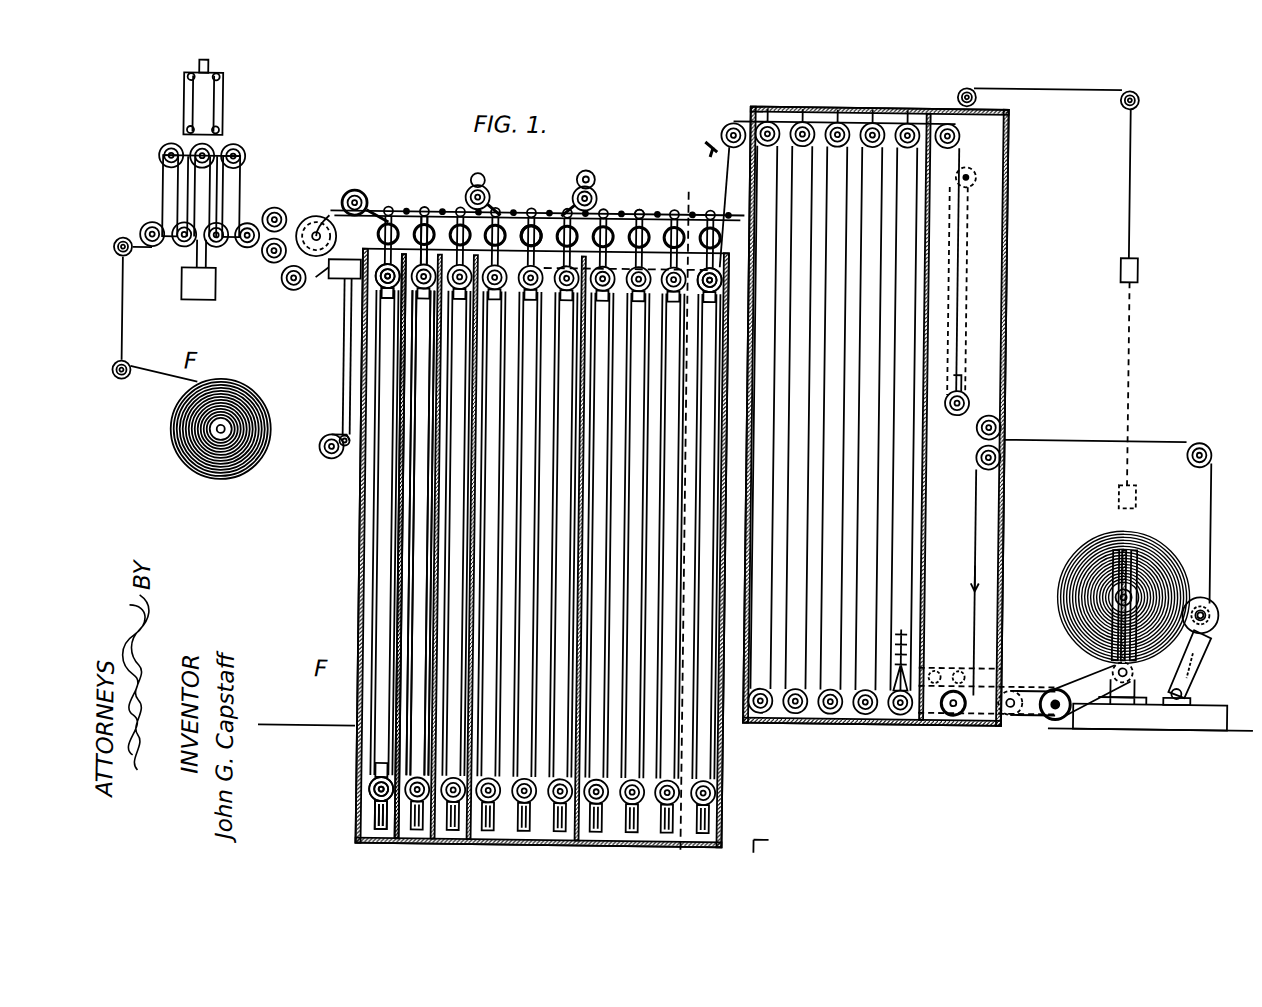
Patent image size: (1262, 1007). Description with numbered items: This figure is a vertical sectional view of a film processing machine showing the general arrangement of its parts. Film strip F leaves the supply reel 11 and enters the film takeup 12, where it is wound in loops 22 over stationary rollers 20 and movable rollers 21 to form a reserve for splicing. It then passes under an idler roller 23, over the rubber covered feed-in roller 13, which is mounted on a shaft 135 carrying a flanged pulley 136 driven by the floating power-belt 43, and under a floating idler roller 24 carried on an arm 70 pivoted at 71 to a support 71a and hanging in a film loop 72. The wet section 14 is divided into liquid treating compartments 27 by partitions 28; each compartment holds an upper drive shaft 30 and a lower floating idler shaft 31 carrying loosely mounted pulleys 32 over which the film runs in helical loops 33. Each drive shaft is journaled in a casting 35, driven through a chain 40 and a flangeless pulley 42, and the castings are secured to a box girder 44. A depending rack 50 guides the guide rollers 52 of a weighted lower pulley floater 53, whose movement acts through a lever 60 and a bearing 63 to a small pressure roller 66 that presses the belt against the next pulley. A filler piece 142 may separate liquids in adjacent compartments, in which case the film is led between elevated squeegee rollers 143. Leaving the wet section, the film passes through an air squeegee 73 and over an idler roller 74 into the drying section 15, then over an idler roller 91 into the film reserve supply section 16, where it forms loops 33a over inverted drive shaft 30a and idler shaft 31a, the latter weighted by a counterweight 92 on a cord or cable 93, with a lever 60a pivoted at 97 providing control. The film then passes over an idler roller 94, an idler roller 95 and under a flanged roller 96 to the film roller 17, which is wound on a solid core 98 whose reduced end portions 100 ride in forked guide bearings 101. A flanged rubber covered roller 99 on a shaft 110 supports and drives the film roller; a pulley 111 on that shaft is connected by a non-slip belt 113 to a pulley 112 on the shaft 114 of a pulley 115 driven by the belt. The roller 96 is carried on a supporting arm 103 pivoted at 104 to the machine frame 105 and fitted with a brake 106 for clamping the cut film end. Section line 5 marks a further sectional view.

The section line 5 is at (666, 187).
The supply reel 11 is at (245, 478).
The film takeup 12 is at (215, 150).
The feed-in roller 13 is at (313, 219).
The wet section 14 is at (359, 500).
The drying section 15 is at (798, 118).
The film reserve supply section 16 is at (1003, 212).
The film roller 17 is at (1068, 522).
The stationary rollers 20 is at (180, 252).
The movable rollers 21 is at (168, 150).
The loops 22 is at (228, 195).
The idler roller 23 is at (282, 291).
The floating idler roller 24 is at (330, 438).
The liquid treating compartments 27 is at (412, 580).
The partitions 28 is at (430, 636).
The upper drive shaft 30 is at (374, 286).
The drive shaft 30a is at (955, 712).
The lower floating idler shaft 31 is at (372, 788).
The idler shaft 31a is at (967, 395).
The pulleys 32 is at (378, 300).
The helical loops 33 is at (398, 534).
The loops 33a is at (990, 492).
The casting 35 is at (608, 212).
The chain 40 is at (335, 281).
The flangeless pulley 42 is at (356, 200).
The floating power-belt 43 is at (712, 228).
The box girder 44 is at (320, 280).
The depending rack 50 is at (380, 712).
The guide rollers 52 is at (380, 822).
The lower pulley floater 53 is at (378, 770).
The lever 60 is at (527, 226).
The lever 60a is at (955, 668).
The bearing 63 is at (420, 216).
The small pressure roller 66 is at (635, 210).
The arm 70 is at (320, 458).
The pivot 71 is at (343, 450).
The support 71a is at (348, 410).
The film loop 72 is at (340, 379).
The air squeegee 73 is at (698, 141).
The idler roller 74 is at (722, 128).
The idler roller 91 is at (940, 118).
The counterweight 92 is at (1117, 266).
The cord or cable 93 is at (1124, 174).
The idler rollers 94 is at (995, 415).
The idler roller 95 is at (1203, 437).
The flanged roller 96 is at (1210, 600).
The pivot 97 is at (975, 665).
The solid core 98 is at (1128, 585).
The flanged rubber covered roller 99 is at (1112, 662).
The reduced end portions 100 is at (1112, 580).
The forked guide bearings 101 is at (1112, 606).
The supporting arm 103 is at (1200, 652).
The pivot 104 is at (1185, 685).
The machine frame 105 is at (1200, 715).
The brake 106 is at (1208, 612).
The shaft 110 is at (1128, 680).
The pulley 111 is at (1117, 690).
The pulley 112 is at (1044, 685).
The non-slip belt 113 is at (1058, 684).
The shaft 114 is at (1010, 710).
The pulley 115 is at (1035, 710).
The shaft 135 is at (322, 216).
The flanged pulley 136 is at (348, 192).
The filler piece 142 is at (470, 190).
The squeegee rollers 143 is at (574, 178).